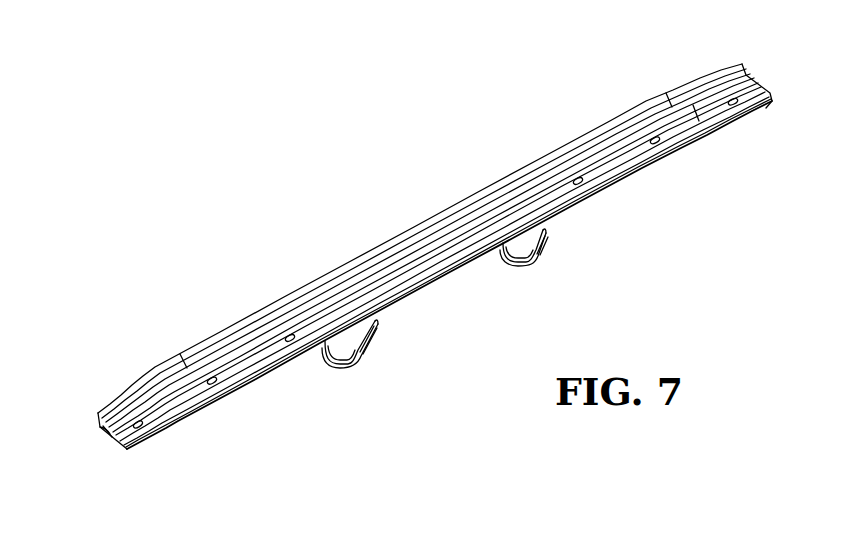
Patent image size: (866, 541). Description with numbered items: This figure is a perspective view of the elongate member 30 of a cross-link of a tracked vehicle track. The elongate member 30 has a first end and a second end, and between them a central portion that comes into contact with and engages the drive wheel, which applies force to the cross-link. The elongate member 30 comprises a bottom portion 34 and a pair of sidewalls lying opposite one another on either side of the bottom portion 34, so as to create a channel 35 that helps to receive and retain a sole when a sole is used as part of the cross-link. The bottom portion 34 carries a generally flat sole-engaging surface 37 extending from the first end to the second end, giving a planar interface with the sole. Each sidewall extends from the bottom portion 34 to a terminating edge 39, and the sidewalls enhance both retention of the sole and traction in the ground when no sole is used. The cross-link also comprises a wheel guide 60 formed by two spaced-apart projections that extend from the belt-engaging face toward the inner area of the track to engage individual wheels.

The elongate member 30 is at (435, 270).
The bottom portion 34 is at (124, 432).
The channel 35 is at (703, 108).
The sole-engaging surface 37 is at (152, 413).
The terminating edge 39 is at (331, 280).
The wheel guide 60 is at (435, 270).